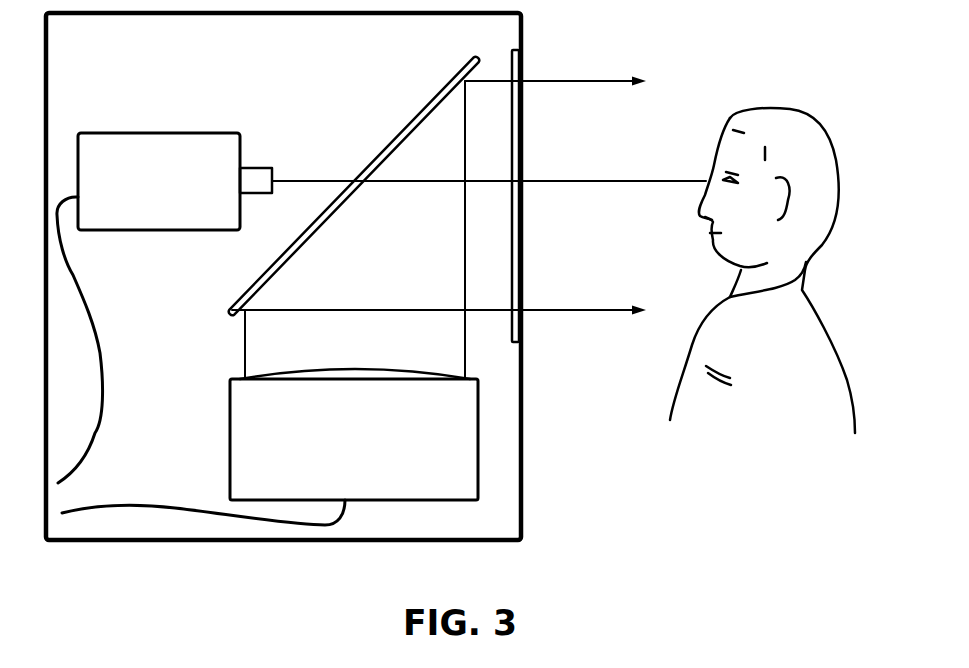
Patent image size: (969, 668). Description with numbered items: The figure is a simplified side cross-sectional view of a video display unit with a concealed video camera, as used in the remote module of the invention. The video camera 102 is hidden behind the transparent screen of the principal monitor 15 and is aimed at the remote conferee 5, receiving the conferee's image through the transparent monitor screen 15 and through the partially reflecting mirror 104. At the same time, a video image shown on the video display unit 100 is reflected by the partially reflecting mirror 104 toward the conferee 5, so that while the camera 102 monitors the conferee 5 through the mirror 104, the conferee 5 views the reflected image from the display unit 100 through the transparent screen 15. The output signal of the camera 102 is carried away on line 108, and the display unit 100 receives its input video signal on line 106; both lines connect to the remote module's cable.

The remote conferee 5 is at (807, 256).
The principal monitor screen 15 is at (519, 127).
The video display unit 100 is at (228, 453).
The video camera 102 is at (200, 133).
The partially reflecting mirror 104 is at (405, 127).
The line 106 is at (98, 510).
The line 108 is at (95, 318).